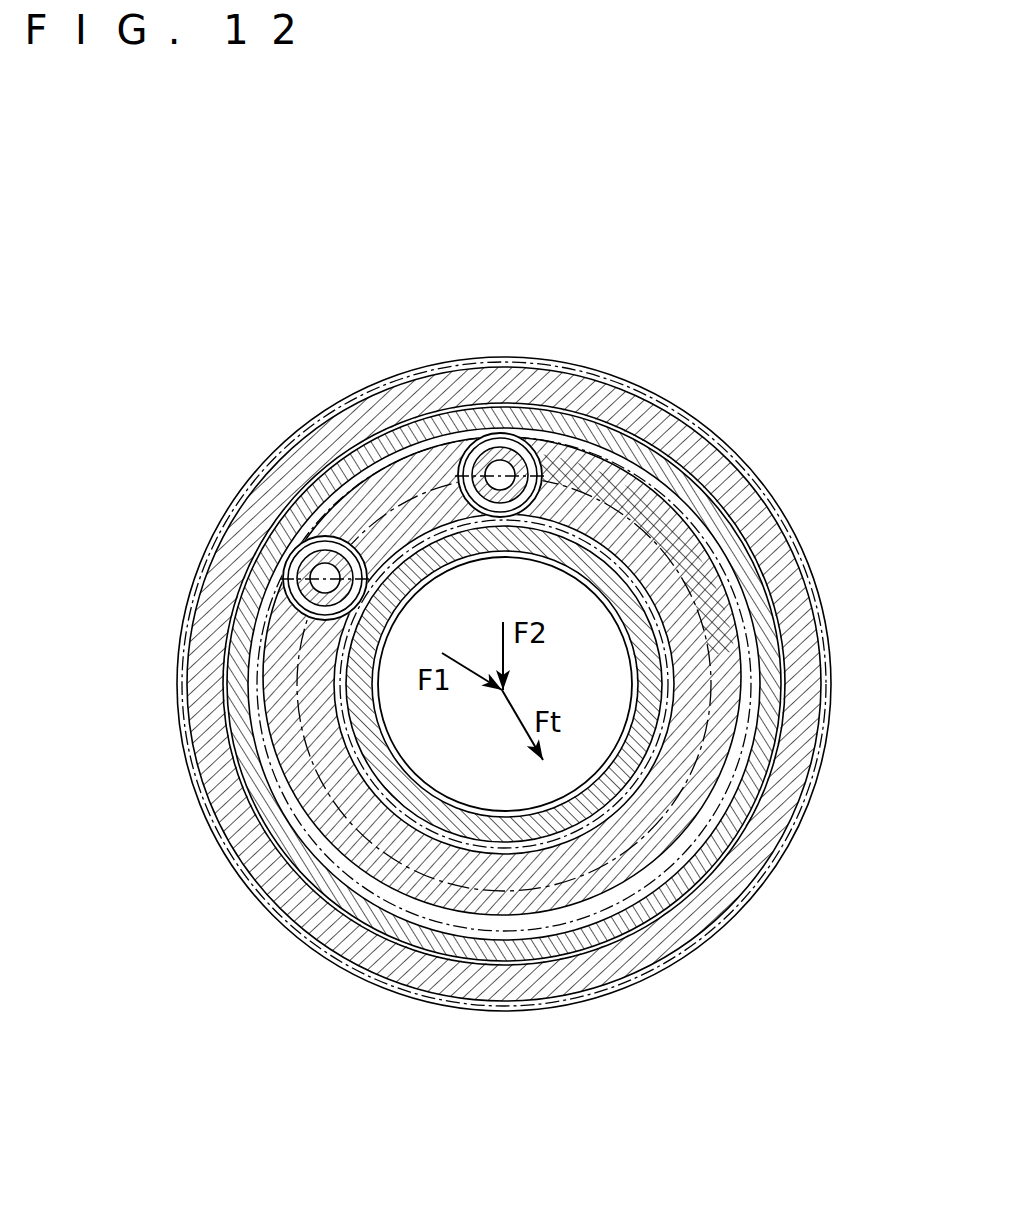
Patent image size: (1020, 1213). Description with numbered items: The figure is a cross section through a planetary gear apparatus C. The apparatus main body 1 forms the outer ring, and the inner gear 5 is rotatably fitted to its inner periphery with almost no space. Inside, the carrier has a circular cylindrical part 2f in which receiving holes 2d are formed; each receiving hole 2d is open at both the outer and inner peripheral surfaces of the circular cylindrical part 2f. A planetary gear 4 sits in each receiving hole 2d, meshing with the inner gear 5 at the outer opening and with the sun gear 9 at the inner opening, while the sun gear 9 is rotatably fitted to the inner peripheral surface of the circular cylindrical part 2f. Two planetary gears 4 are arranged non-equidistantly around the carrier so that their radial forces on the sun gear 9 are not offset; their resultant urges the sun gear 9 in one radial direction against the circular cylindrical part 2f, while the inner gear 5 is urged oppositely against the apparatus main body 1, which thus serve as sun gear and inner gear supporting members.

The planetary gear apparatus C is at (664, 302).
The apparatus main body 1 is at (738, 463).
The inner gear 5 is at (750, 576).
The circular cylindrical part 2f is at (732, 675).
The receiving hole 2d is at (458, 450).
The planetary gear 4 is at (510, 455).
The sun gear 9 is at (460, 824).